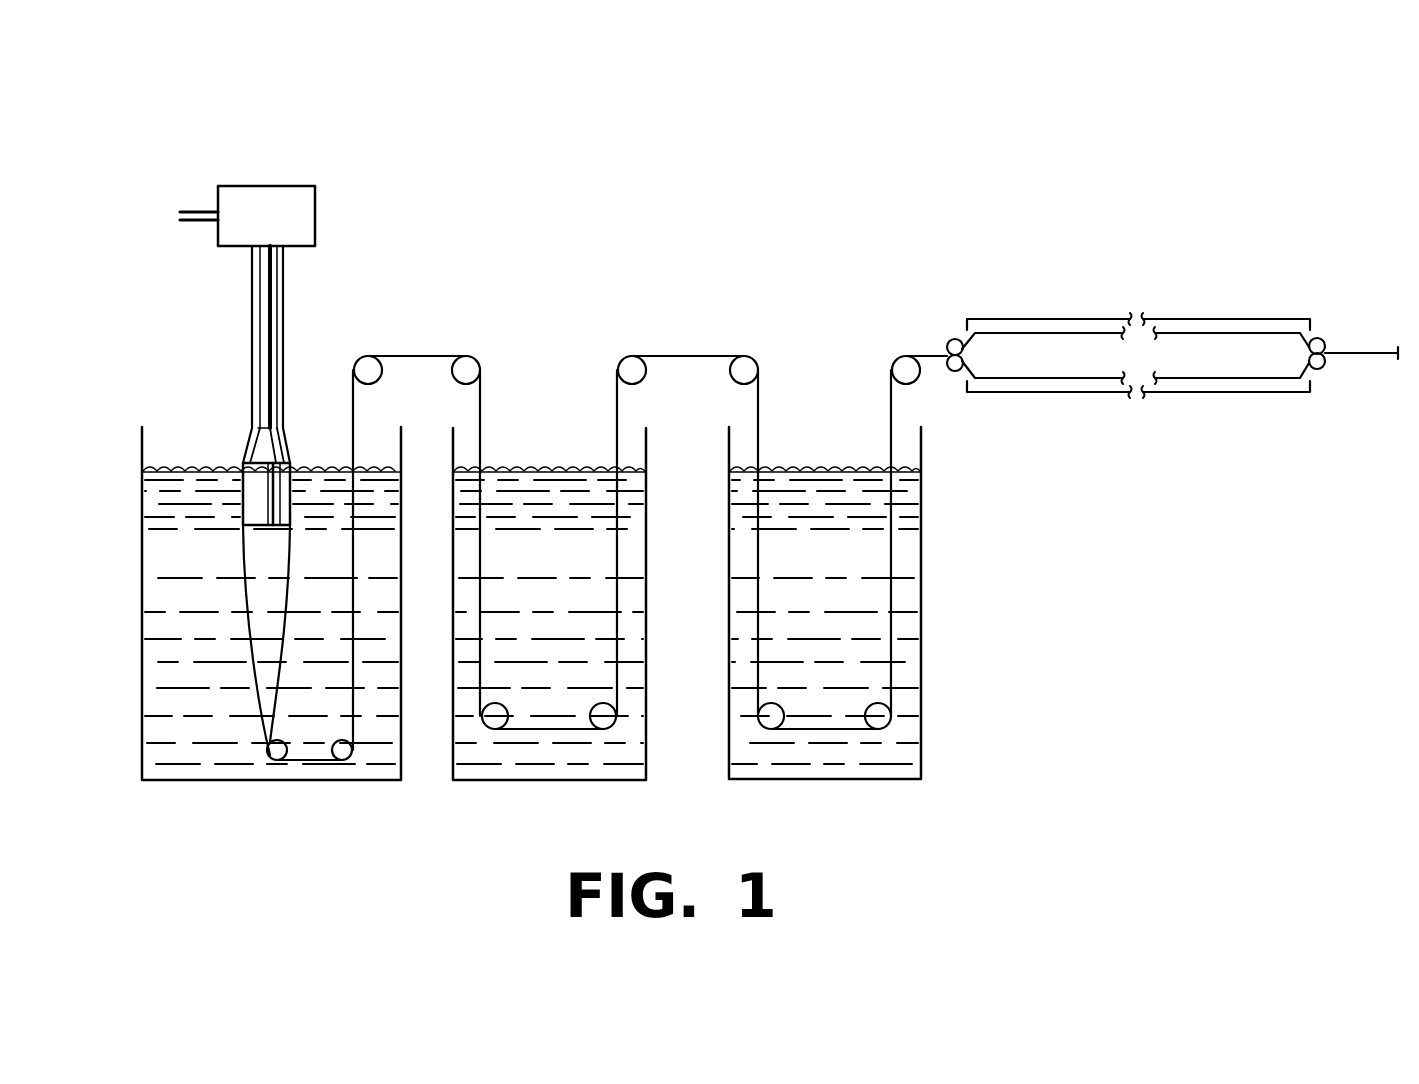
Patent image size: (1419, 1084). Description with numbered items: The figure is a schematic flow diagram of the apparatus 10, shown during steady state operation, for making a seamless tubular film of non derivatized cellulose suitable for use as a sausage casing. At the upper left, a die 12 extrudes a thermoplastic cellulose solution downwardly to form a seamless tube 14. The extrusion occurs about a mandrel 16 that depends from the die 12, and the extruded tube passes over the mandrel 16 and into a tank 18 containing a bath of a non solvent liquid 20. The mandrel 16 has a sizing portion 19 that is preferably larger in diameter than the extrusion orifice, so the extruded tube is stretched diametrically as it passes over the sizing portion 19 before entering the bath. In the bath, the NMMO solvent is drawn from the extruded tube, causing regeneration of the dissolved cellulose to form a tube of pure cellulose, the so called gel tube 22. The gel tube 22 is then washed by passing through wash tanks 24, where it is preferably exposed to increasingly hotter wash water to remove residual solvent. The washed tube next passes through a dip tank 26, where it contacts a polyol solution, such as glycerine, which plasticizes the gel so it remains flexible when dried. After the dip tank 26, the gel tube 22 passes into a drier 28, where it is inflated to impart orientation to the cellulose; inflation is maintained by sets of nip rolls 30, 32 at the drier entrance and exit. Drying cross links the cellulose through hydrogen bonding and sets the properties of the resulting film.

The apparatus 10 is at (630, 200).
The die 12 is at (315, 212).
The seamless tube 14 is at (285, 268).
The mandrel 16 is at (262, 345).
The tank 18 is at (140, 688).
The sizing portion 19 is at (263, 503).
The non solvent liquid 20 is at (370, 757).
The gel tube 22 is at (420, 350).
The wash tanks 24 is at (648, 598).
The dip tank 26 is at (921, 598).
The drier 28 is at (1088, 318).
The nip rolls 30 is at (952, 340).
The nip rolls 32 is at (1325, 367).